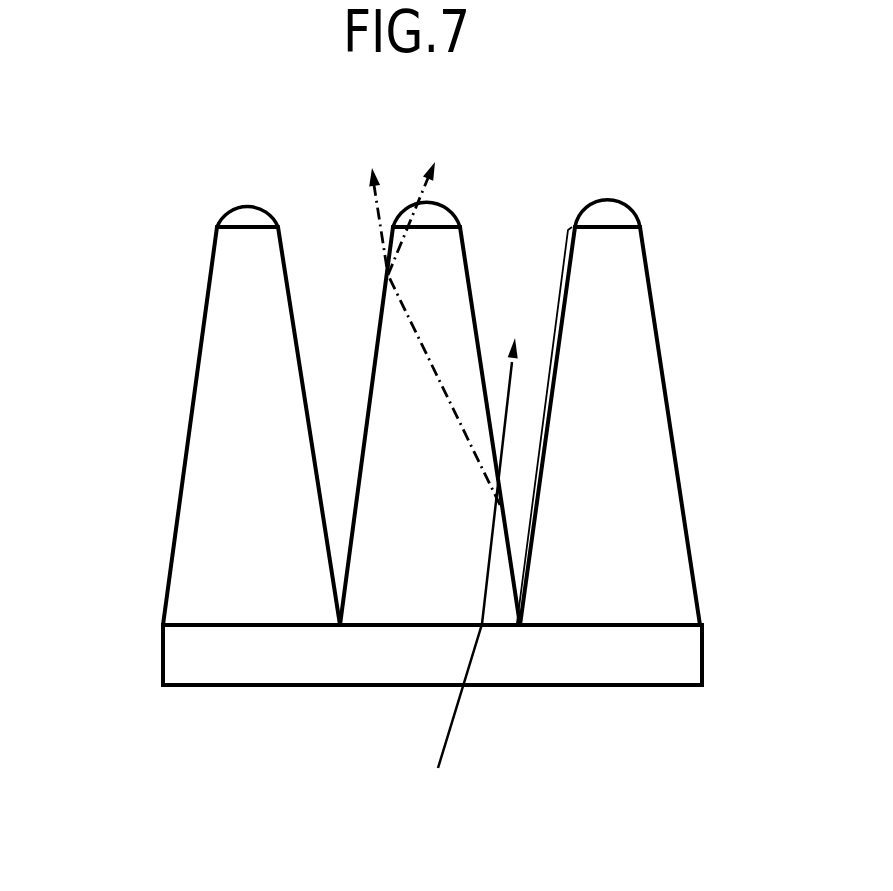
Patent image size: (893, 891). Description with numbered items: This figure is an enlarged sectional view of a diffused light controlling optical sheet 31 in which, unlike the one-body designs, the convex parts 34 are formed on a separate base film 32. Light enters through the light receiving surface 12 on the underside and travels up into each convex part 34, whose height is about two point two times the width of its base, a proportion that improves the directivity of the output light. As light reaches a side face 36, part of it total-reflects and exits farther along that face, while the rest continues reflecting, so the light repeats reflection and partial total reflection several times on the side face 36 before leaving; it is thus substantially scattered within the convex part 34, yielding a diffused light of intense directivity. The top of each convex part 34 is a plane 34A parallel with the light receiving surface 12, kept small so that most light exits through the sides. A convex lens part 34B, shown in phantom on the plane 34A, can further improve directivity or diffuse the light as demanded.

The diffused light controlling optical sheet 31 is at (160, 245).
The base film 32 is at (688, 660).
The light receiving surface 12 is at (628, 685).
The convex part 34 is at (653, 460).
The plane 34A is at (610, 226).
The convex lens part 34B is at (260, 207).
The side face 36 is at (538, 408).